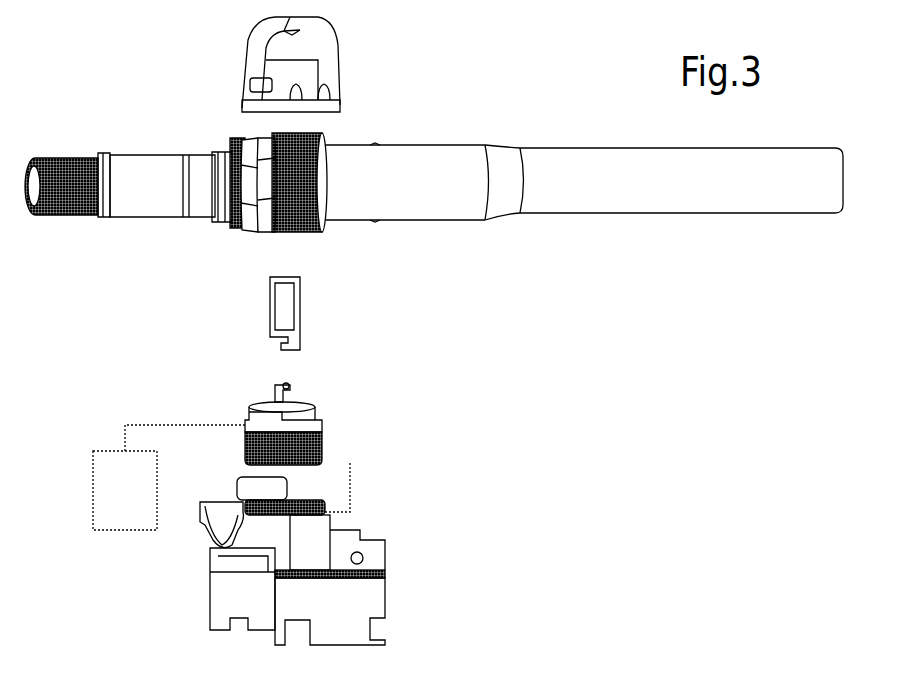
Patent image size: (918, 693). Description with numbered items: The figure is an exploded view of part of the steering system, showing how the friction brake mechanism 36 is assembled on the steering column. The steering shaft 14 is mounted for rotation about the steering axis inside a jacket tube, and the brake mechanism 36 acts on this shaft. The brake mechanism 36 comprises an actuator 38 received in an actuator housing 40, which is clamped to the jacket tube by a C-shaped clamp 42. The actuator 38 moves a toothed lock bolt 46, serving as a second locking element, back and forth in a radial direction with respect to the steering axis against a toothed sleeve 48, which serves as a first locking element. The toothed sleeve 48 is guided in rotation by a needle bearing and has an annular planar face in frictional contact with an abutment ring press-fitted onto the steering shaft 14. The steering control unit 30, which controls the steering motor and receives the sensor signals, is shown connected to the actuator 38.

The steering shaft 14 is at (147, 172).
The steering control unit 30 is at (117, 463).
The friction brake mechanism 36 is at (383, 368).
The actuator 38 is at (325, 447).
The actuator housing 40 is at (365, 588).
The C-shaped clamp 42 is at (322, 47).
The toothed lock bolt 46 is at (272, 315).
The toothed sleeve 48 is at (305, 230).